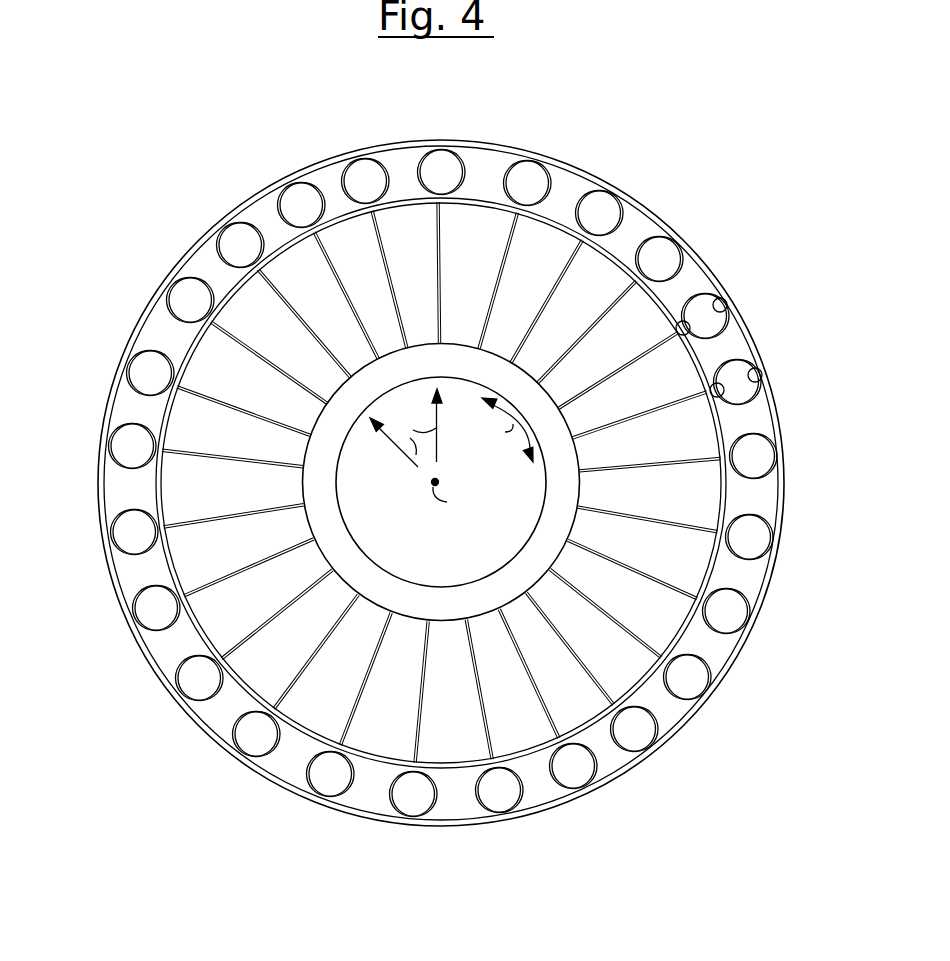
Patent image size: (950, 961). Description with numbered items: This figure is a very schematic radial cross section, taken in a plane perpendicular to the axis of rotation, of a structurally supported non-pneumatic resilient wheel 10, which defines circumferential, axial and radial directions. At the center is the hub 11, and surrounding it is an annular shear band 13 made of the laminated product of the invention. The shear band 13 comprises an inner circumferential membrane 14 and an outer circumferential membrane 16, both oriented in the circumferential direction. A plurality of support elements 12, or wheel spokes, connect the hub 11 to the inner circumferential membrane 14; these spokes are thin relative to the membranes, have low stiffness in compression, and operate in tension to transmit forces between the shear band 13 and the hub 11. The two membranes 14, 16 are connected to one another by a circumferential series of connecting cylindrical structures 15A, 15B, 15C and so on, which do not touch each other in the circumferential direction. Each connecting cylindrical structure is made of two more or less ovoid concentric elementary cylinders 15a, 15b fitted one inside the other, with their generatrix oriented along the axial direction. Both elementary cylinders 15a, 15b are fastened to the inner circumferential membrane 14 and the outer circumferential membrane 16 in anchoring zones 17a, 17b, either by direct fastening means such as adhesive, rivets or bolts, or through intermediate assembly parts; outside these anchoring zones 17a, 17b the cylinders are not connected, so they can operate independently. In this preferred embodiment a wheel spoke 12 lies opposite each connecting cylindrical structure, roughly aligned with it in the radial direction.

The non-pneumatic resilient wheel 10 is at (664, 178).
The hub 11 is at (328, 530).
The support elements 12 is at (317, 240).
The shear band 13 is at (132, 413).
The inner circumferential membrane 14 is at (190, 347).
The connecting cylindrical structure 15A is at (389, 158).
The connecting cylindrical structure 15B is at (474, 158).
The connecting cylindrical structure 15C is at (557, 172).
The elementary cylinder 15a is at (126, 468).
The elementary cylinder 15b is at (120, 463).
The outer circumferential membrane 16 is at (143, 312).
The anchoring zone 17a is at (745, 304).
The anchoring zone 17b is at (679, 313).